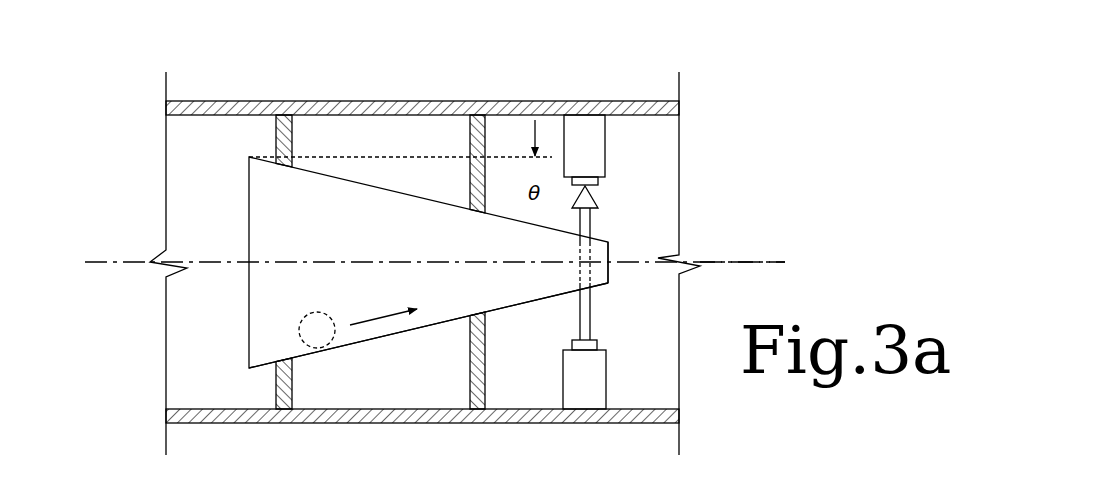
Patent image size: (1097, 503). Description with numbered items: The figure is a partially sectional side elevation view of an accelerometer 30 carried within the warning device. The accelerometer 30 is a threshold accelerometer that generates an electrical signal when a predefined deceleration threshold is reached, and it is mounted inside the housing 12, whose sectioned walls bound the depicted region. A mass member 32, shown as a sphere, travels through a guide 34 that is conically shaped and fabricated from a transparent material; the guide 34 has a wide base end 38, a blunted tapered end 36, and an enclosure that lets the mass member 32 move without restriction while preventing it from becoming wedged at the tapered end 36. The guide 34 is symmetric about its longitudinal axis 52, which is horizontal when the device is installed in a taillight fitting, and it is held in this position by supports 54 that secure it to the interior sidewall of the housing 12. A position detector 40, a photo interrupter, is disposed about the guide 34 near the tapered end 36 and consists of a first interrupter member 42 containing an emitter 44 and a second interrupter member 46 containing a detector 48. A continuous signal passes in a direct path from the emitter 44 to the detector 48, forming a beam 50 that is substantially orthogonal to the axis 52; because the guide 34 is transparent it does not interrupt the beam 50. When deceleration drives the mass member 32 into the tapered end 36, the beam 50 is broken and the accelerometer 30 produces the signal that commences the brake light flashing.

The housing 12 is at (343, 101).
The accelerometer 30 is at (148, 220).
The mass member 32 is at (317, 335).
The guide 34 is at (440, 318).
The tapered end 36 is at (609, 252).
The base end 38 is at (248, 193).
The position detector 40 is at (605, 144).
The first interrupter member 42 is at (598, 383).
The emitter 44 is at (600, 345).
The second interrupter member 46 is at (586, 128).
The detector 48 is at (598, 182).
The beam 50 is at (578, 315).
The longitudinal axis 52 is at (758, 260).
The supports 54 is at (470, 128).